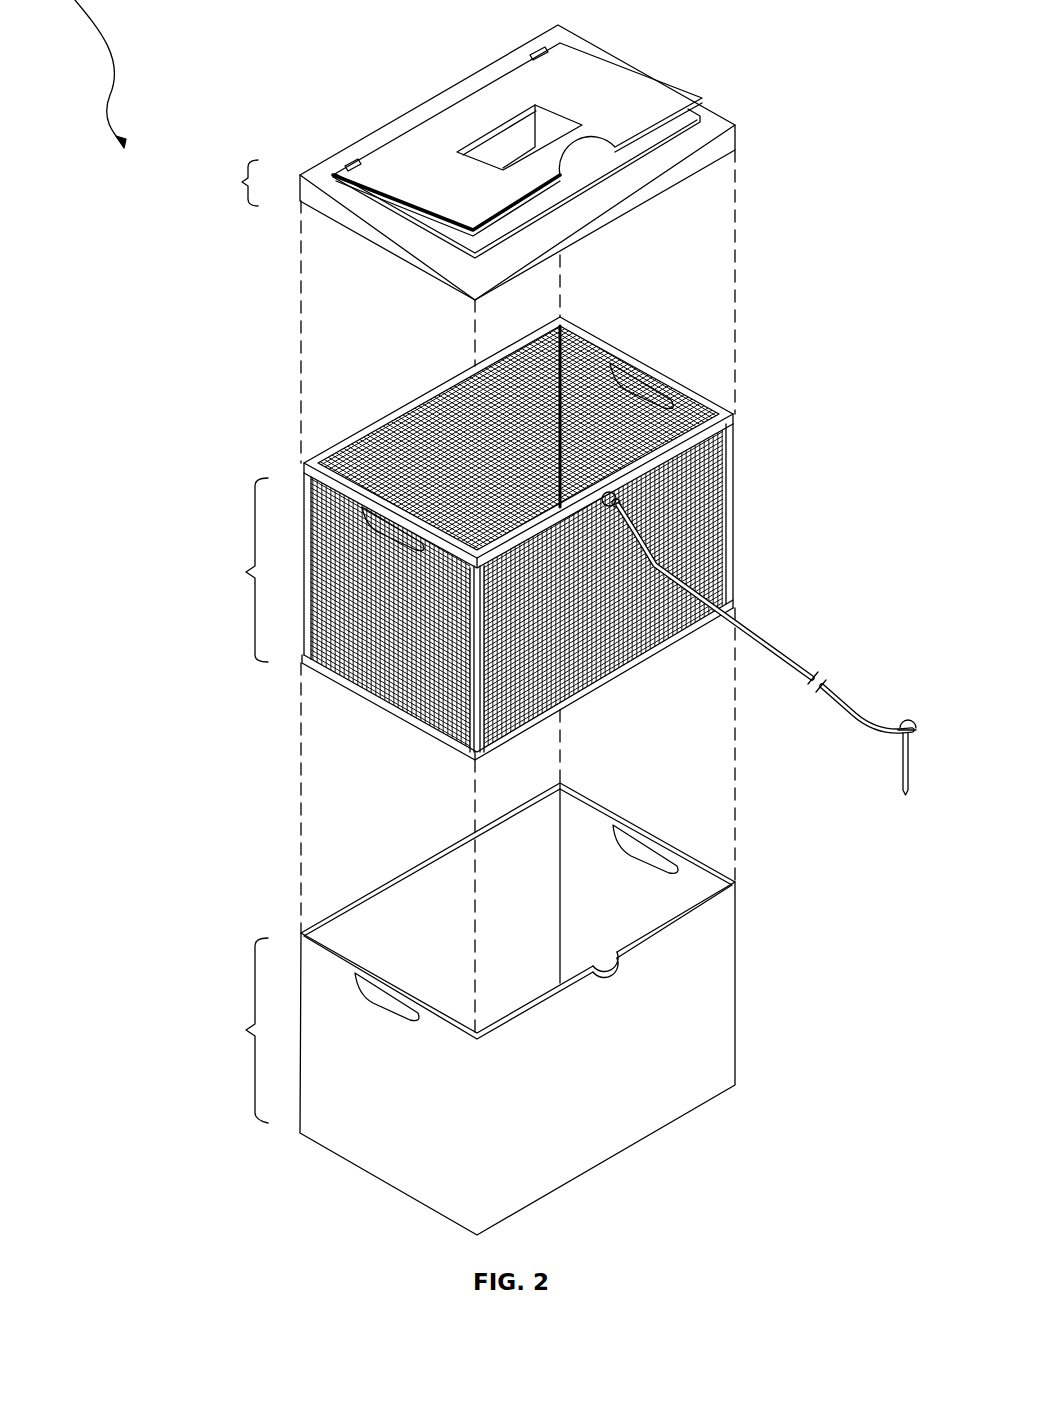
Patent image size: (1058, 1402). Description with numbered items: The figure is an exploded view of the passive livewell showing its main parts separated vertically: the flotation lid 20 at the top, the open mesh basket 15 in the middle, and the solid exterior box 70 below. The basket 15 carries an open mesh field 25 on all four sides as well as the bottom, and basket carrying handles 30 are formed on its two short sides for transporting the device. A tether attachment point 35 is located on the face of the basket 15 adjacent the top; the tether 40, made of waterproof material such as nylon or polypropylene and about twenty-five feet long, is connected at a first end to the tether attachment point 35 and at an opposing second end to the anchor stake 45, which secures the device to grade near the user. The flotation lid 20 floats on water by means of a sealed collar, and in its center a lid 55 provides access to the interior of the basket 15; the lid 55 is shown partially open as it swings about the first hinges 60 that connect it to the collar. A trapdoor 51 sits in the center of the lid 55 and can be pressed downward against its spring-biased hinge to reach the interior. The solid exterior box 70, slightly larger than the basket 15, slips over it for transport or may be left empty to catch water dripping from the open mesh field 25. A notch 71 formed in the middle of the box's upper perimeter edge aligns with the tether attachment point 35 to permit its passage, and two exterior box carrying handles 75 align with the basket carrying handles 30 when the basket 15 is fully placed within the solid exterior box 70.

The open mesh basket 15 is at (526, 543).
The flotation lid 20 is at (236, 184).
The open mesh field 25 is at (483, 443).
The basket carrying handles 30 is at (640, 390).
The tether attachment point 35 is at (625, 500).
The tether 40 is at (772, 638).
The anchor stake 45 is at (910, 722).
The trapdoor 51 is at (505, 150).
The lid 55 is at (640, 108).
The first hinges 60 is at (540, 52).
The solid exterior box 70 is at (516, 1009).
The notch 71 is at (617, 968).
The exterior box carrying handles 75 is at (655, 858).